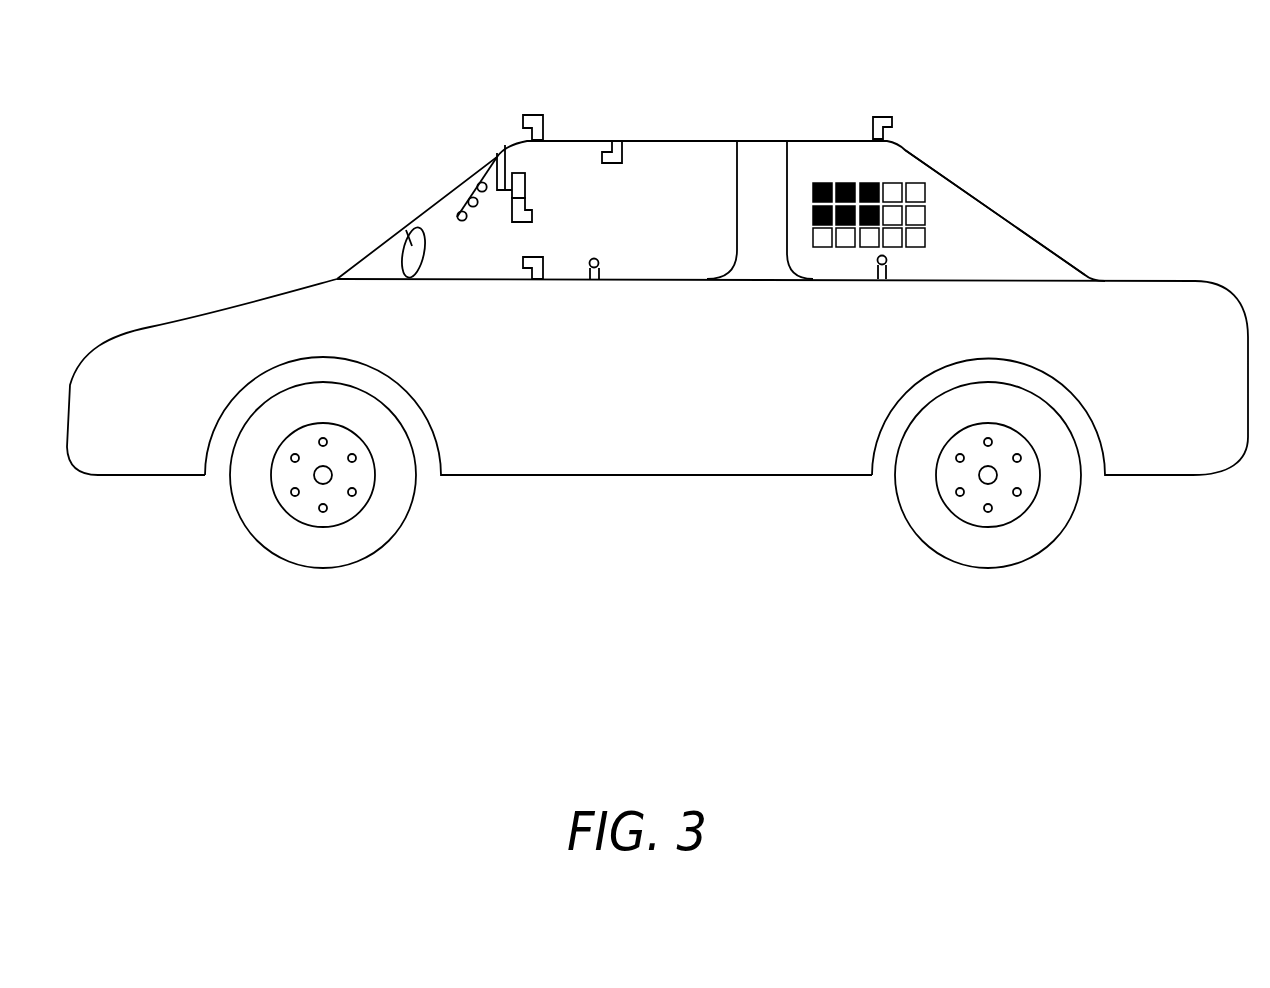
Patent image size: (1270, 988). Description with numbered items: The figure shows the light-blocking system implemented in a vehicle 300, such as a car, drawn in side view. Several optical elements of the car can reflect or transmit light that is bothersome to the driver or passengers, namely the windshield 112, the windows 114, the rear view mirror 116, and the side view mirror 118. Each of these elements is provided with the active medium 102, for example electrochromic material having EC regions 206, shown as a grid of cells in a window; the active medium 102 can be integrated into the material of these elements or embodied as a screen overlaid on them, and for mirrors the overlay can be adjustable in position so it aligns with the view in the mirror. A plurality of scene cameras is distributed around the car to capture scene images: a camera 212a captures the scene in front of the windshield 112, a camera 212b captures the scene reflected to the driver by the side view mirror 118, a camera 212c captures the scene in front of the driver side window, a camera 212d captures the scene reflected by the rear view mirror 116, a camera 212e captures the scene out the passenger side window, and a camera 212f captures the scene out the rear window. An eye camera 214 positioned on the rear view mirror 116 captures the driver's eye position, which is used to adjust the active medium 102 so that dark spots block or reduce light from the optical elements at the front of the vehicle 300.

The vehicle 300 is at (1066, 149).
The active medium 102 is at (460, 213).
The windshield 112 is at (462, 186).
The windows 114 is at (1010, 248).
The rear view mirror 116 is at (527, 187).
The side view mirror 118 is at (407, 227).
The EC regions 206 is at (825, 182).
The camera 212a is at (523, 120).
The camera 212b is at (537, 280).
The camera 212c is at (593, 258).
The camera 212d is at (610, 165).
The camera 212e is at (880, 116).
The camera 212f is at (883, 281).
The eye camera 214 is at (518, 222).